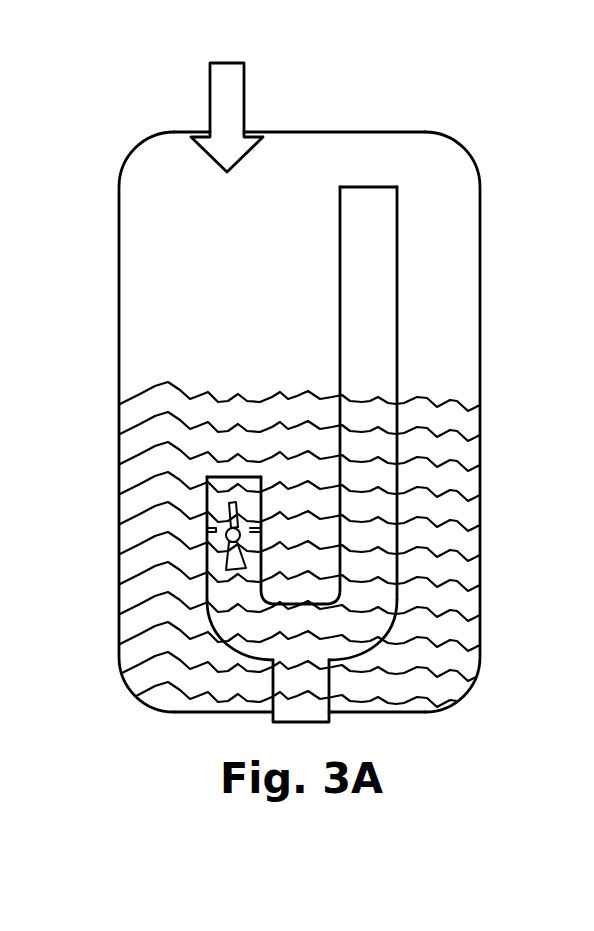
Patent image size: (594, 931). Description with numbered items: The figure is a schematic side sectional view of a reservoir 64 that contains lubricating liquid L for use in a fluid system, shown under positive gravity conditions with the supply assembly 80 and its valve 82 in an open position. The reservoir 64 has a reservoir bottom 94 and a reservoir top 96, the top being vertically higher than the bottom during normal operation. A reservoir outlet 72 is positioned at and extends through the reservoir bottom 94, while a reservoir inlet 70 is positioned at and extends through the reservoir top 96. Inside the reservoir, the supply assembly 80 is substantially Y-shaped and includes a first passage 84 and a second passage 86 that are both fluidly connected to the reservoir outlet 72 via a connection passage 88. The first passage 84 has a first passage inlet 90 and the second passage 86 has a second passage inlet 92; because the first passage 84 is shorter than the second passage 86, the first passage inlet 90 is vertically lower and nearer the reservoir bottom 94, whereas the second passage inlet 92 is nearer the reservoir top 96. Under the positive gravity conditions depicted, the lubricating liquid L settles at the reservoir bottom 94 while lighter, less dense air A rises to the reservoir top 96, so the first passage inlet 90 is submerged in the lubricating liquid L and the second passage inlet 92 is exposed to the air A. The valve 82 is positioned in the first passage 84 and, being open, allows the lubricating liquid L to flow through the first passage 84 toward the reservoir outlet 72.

The reservoir 64 is at (104, 321).
The reservoir inlet 70 is at (209, 131).
The reservoir top 96 is at (305, 131).
The reservoir bottom 94 is at (193, 713).
The second passage inlet 92 is at (370, 186).
The supply assembly 80 is at (409, 375).
The second passage 86 is at (397, 292).
The connection passage 88 is at (330, 678).
The reservoir outlet 72 is at (285, 722).
The first passage inlet 90 is at (234, 477).
The first passage 84 is at (153, 468).
The valve 82 is at (204, 556).
The air A is at (140, 273).
The lubricating liquid L is at (135, 428).